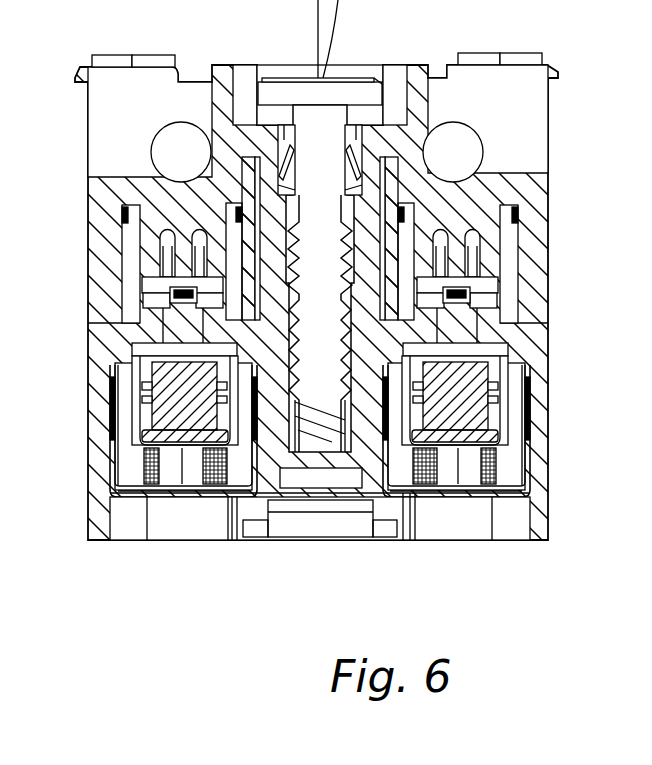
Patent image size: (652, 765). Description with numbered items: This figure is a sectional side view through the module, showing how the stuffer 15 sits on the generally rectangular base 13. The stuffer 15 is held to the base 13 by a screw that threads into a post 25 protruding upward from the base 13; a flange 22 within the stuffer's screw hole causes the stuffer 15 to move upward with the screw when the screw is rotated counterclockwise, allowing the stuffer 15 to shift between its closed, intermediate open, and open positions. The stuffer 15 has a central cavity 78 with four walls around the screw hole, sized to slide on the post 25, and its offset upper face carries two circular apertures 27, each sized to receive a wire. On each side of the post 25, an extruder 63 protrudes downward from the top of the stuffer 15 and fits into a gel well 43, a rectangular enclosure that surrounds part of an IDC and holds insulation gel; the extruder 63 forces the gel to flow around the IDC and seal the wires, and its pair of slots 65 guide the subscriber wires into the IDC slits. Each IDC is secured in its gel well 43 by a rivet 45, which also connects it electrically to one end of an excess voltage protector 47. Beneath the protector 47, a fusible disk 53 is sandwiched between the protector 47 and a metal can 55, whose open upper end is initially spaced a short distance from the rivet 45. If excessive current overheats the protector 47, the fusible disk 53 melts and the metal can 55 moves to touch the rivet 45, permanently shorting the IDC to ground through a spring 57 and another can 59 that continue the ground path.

The base 13 is at (537, 373).
The stuffer 15 is at (530, 268).
The flange 22 is at (357, 163).
The post 25 is at (394, 157).
The circular apertures 27 is at (480, 137).
The gel well 43 is at (527, 220).
The rivet 45 is at (520, 322).
The excess voltage protector 47 is at (503, 415).
The fusible disk 53 is at (487, 432).
The metal can 55 is at (130, 367).
The spring 57 is at (495, 470).
The can 59 is at (110, 430).
The extruder 63 is at (153, 247).
The slots 65 is at (497, 173).
The central cavity 78 is at (325, 200).